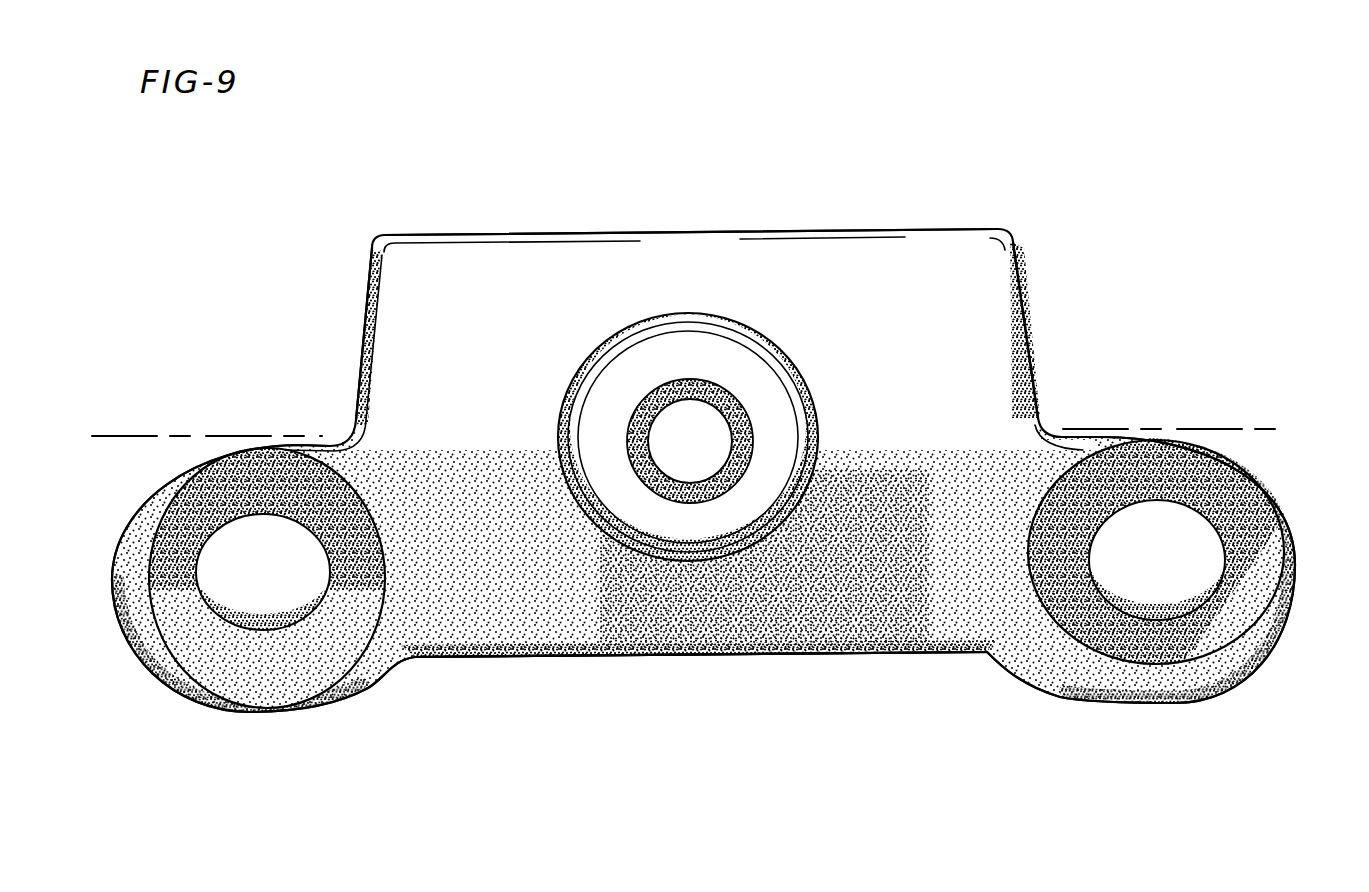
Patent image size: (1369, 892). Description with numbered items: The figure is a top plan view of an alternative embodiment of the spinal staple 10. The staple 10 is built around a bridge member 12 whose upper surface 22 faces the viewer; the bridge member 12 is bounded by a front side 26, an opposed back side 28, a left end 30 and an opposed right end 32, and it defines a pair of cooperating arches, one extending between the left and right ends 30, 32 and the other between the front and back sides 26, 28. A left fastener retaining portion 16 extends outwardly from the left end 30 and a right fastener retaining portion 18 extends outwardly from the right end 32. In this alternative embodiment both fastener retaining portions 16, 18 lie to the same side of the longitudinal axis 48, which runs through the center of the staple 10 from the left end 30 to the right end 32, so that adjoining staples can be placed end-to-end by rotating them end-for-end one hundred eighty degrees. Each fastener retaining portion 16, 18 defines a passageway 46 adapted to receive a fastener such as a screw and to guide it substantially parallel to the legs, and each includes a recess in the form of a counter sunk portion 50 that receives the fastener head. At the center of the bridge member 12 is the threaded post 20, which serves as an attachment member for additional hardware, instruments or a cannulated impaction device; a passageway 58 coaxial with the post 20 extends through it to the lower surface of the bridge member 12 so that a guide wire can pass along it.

The spinal staple 10 is at (338, 222).
The bridge member 12 is at (440, 262).
The left fastener retaining portion 16 is at (380, 672).
The right fastener retaining portion 18 is at (1026, 640).
The threaded post 20 is at (650, 360).
The upper surface 22 is at (817, 267).
The front side 26 is at (792, 664).
The back side 28 is at (671, 230).
The left end 30 is at (352, 370).
The right end 32 is at (1042, 300).
The passageway 46 is at (233, 557).
The longitudinal axis 48 is at (1108, 427).
The counter sunk portion 50 is at (250, 657).
The passageway 58 is at (692, 430).